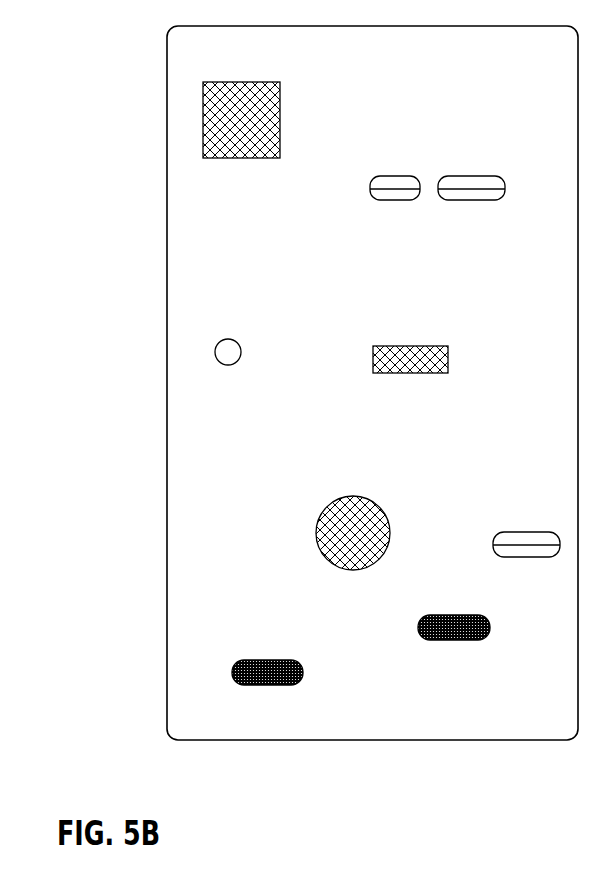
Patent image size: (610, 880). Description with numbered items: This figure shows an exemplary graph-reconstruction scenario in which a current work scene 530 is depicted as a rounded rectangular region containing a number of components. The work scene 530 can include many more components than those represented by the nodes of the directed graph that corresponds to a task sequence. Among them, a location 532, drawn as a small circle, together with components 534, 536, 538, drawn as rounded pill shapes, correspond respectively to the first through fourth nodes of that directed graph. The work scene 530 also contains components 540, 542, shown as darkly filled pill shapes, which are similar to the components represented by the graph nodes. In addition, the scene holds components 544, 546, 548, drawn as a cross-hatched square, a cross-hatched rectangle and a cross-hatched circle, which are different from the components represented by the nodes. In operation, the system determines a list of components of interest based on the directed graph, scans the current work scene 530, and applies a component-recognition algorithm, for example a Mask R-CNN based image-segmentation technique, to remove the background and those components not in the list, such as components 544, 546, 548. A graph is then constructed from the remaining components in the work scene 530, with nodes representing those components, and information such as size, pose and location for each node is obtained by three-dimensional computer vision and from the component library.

The current work scene 530 is at (166, 364).
The location 532 is at (225, 339).
The component 534 is at (392, 176).
The component 536 is at (476, 176).
The component 538 is at (513, 532).
The component 540 is at (252, 660).
The component 542 is at (445, 640).
The component 544 is at (260, 158).
The component 546 is at (407, 346).
The component 548 is at (372, 500).